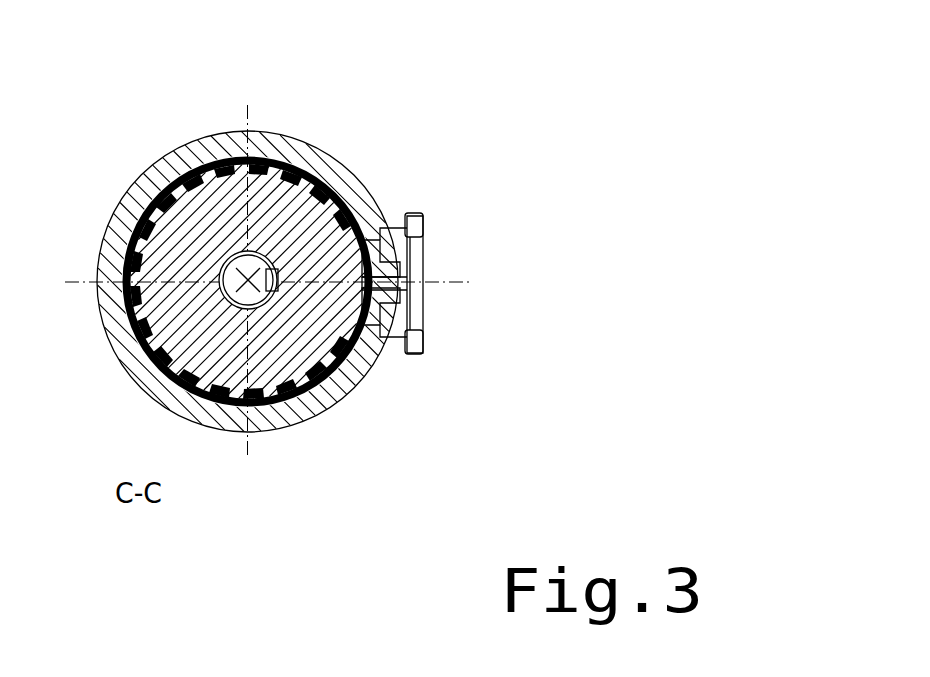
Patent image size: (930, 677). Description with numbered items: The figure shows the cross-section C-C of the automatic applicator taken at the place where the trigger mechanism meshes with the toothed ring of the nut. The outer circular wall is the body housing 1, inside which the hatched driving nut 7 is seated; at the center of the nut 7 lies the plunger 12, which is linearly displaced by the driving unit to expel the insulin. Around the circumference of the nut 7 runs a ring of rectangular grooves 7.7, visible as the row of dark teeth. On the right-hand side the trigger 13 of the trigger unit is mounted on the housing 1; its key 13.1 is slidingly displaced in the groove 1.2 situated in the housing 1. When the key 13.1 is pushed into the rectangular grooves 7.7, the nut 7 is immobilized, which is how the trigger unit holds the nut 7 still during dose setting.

The body housing 1 is at (217, 242).
The groove 1.2 is at (497, 285).
The nut 7 is at (293, 246).
The rectangular grooves 7.7 is at (320, 206).
The plunger 12 is at (312, 324).
The trigger 13 is at (469, 246).
The key 13.1 is at (600, 289).